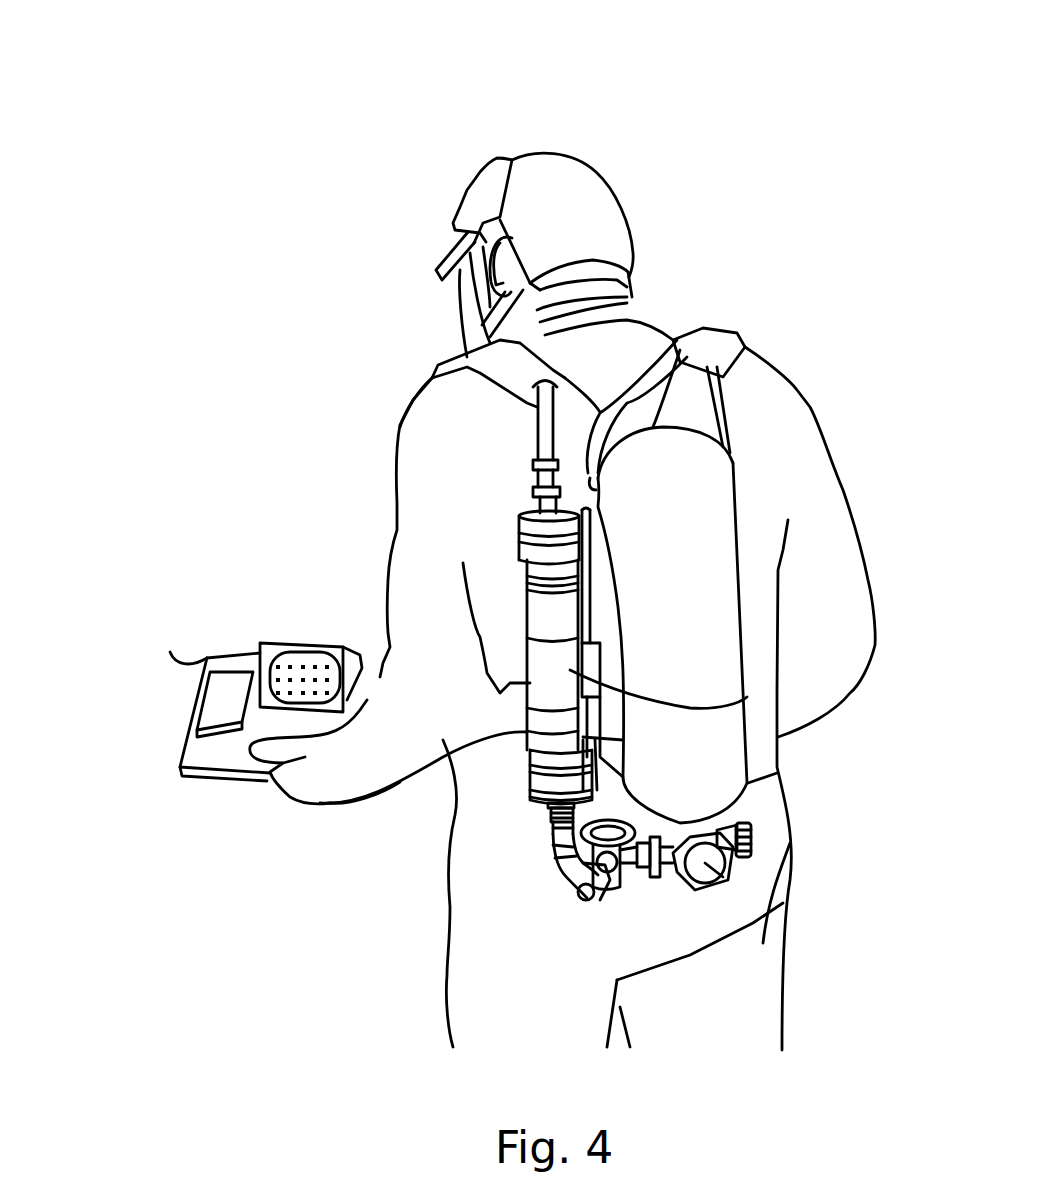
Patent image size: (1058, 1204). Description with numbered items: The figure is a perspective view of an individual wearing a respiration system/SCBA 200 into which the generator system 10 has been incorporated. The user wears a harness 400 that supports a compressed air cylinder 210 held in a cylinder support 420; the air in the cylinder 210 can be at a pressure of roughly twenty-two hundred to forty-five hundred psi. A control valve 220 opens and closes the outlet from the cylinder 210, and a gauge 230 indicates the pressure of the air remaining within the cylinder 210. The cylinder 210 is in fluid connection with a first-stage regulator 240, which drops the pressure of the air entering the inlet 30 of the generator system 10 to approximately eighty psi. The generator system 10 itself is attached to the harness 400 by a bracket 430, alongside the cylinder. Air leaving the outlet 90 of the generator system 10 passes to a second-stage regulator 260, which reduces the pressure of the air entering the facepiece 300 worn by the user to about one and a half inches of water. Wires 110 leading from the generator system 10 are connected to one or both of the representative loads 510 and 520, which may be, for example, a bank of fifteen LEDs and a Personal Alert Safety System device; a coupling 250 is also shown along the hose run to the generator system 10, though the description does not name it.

The generator system 10 is at (512, 634).
The inlet 30 is at (545, 812).
The outlet 90 is at (527, 507).
The wires 110 is at (547, 813).
The respiration system/SCBA 200 is at (183, 173).
The compressed air cylinder 210 is at (707, 593).
The control valve 220 is at (750, 827).
The gauge 230 is at (713, 877).
The first-stage regulator 240 is at (567, 867).
The hose coupling 250 is at (527, 473).
The second-stage regulator 260 is at (447, 342).
The facepiece 300 is at (437, 307).
The harness 400 is at (577, 400).
The cylinder support 420 is at (605, 557).
The bracket 430 is at (747, 699).
The representative load 510 is at (265, 643).
The representative load 520 is at (220, 698).